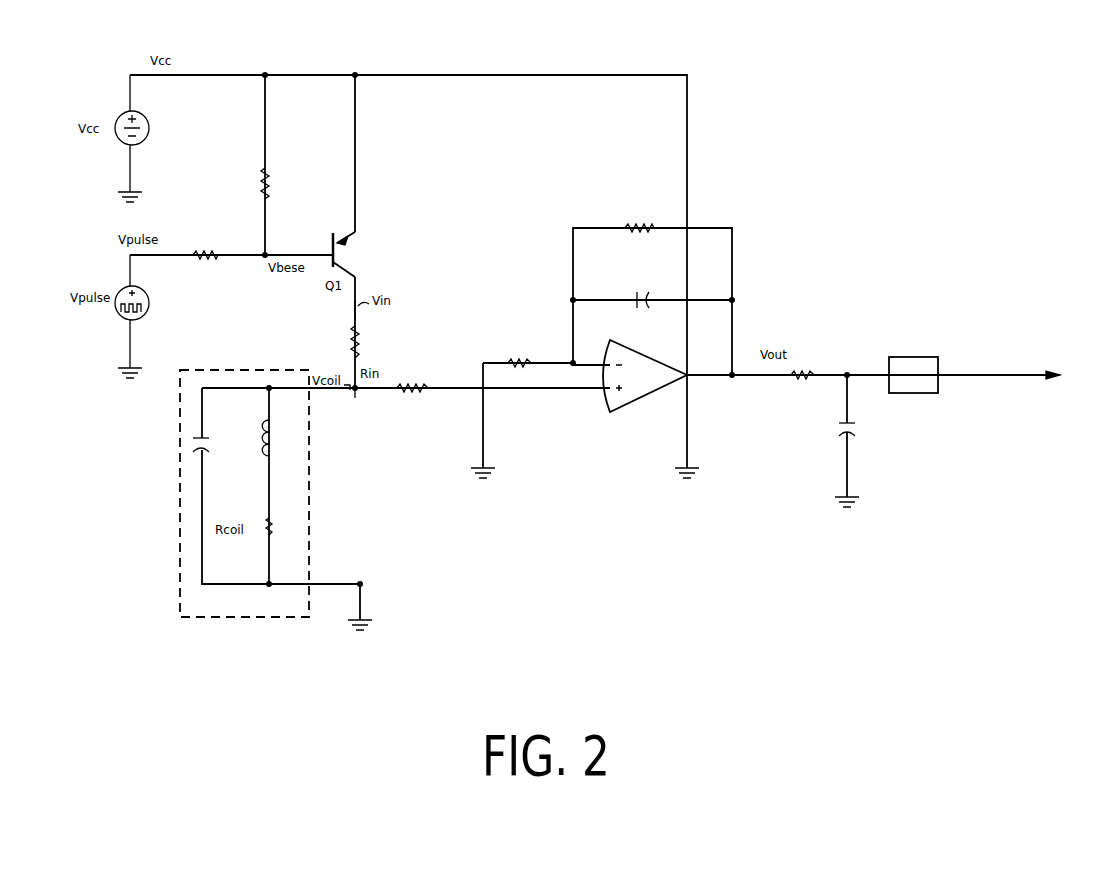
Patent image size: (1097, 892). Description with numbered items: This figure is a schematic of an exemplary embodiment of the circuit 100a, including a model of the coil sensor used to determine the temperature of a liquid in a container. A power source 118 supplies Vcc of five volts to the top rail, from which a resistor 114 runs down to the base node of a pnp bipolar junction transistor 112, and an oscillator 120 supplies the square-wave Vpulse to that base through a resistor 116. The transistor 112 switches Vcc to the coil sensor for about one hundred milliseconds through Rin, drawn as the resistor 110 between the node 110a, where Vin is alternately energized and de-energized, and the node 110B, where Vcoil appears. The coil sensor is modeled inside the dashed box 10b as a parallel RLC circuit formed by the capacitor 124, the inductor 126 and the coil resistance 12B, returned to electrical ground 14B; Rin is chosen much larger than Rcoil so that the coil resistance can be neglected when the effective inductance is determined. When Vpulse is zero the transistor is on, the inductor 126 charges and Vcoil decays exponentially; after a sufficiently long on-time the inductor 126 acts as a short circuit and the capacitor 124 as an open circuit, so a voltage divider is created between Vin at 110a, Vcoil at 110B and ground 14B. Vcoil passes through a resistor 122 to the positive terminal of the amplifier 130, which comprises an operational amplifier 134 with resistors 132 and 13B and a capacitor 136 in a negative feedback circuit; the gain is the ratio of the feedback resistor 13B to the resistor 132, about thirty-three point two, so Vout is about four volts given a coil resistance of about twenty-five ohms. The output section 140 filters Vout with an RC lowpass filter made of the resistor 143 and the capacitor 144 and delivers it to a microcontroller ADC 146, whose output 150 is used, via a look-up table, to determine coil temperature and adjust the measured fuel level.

The circuit 100a is at (752, 58).
The power source 118 is at (148, 134).
The pull-up resistor 114 is at (266, 174).
The base resistor 116 is at (210, 265).
The oscillator 120 is at (138, 318).
The pnp bipolar junction transistor 112 is at (371, 228).
The input resistor 110 is at (358, 330).
The Vin node 110a is at (348, 318).
The Vcoil node 110B is at (355, 398).
The resistor 122 is at (404, 398).
The capacitor 124 is at (190, 440).
The inductor 126 is at (272, 455).
The coil resistance 12B is at (272, 535).
The coil sensor circuit model 10b is at (198, 622).
The electrical ground 14B is at (370, 620).
The resistor 132 is at (522, 358).
The feedback resistor 13B is at (634, 224).
The capacitor 136 is at (646, 302).
The operational amplifier 134 is at (618, 412).
The amplifier 130 is at (663, 497).
The lowpass filter resistor 143 is at (812, 365).
The lowpass filter capacitor 144 is at (860, 430).
The microcontroller ADC 146 is at (917, 393).
The output 150 is at (1030, 380).
The filter stage 140 is at (801, 487).